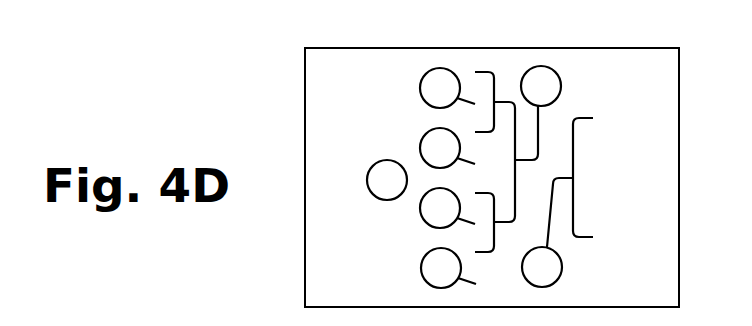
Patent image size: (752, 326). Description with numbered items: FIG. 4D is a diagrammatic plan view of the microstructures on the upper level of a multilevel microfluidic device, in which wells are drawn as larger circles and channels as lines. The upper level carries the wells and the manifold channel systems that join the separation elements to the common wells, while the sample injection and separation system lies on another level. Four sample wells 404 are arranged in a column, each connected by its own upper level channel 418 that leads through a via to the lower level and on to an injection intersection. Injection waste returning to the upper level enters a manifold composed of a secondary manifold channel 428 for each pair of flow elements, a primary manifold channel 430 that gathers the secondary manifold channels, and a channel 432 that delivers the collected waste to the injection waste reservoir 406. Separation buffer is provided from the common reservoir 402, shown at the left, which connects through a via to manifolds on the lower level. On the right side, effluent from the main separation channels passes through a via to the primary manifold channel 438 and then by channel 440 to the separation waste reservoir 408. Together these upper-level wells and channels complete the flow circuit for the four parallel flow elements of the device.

The common reservoir 402 is at (373, 166).
The sample well 404 is at (428, 70).
The injection waste reservoir 406 is at (558, 70).
The separation waste reservoir 408 is at (563, 267).
The upper level channel 418 is at (467, 98).
The secondary manifold channel 428 is at (496, 84).
The primary manifold channel 430 is at (517, 186).
The channel 432 is at (545, 114).
The primary manifold channel 438 is at (573, 155).
The channel 440 is at (549, 239).